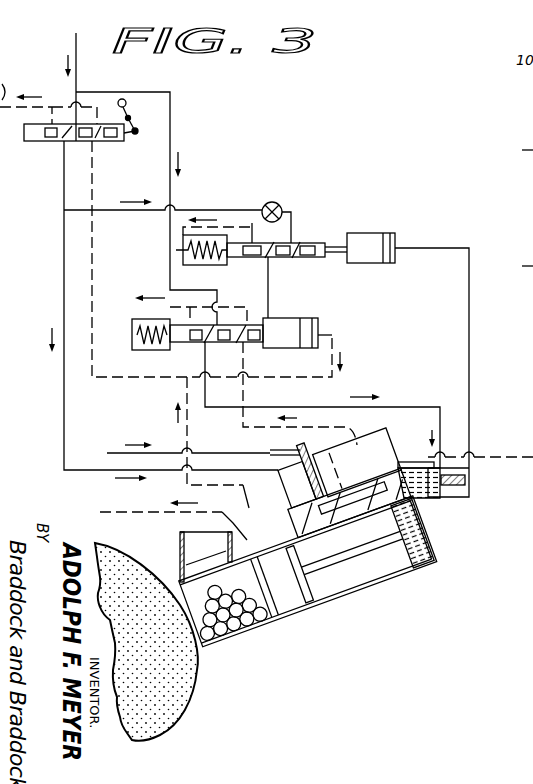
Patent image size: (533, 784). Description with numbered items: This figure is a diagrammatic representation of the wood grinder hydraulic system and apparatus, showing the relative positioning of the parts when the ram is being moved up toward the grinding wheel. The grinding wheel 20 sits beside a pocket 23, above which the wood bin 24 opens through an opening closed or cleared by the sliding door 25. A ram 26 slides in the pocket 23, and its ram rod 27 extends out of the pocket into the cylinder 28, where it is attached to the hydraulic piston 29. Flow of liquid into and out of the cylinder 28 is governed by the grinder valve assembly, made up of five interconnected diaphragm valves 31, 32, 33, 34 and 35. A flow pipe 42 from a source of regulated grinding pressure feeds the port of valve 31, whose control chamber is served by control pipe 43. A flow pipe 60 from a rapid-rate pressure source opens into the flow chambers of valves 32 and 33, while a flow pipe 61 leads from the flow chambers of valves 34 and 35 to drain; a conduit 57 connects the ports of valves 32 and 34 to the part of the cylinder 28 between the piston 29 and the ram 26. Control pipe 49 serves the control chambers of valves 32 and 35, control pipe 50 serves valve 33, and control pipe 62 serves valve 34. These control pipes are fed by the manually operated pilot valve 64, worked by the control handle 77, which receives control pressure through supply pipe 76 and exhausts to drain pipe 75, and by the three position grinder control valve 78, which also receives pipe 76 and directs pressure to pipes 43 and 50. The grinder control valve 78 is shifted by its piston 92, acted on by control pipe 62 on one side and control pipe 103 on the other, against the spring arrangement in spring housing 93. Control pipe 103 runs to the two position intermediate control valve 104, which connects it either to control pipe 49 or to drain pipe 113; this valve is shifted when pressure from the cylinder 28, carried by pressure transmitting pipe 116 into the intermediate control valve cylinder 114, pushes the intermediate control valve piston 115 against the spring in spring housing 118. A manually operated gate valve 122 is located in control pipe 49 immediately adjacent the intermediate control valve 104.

The grinding wheel 20 is at (198, 670).
The pocket 23 is at (270, 612).
The wood bin 24 is at (180, 540).
The sliding door 25 is at (190, 581).
The ram 26 is at (288, 559).
The ram rod 27 is at (322, 575).
The cylinder 28 is at (383, 570).
The hydraulic piston 29 is at (429, 562).
The valve 31 is at (450, 470).
The valve 32 is at (310, 496).
The valve 33 is at (374, 484).
The valve 34 is at (288, 513).
The valve 35 is at (406, 467).
The flow pipe 42 is at (466, 482).
The control pipe 43 is at (400, 407).
The control pipe 49 is at (64, 396).
The control pipe 50 is at (245, 428).
The conduit 57 is at (303, 533).
The flow pipe 60 is at (310, 448).
The flow pipe 61 is at (492, 457).
The control pipe 62 is at (333, 339).
The manually operated pilot valve 64 is at (38, 141).
The exhaust or drain pipe 75 is at (48, 97).
The control pressure supply pipe 76 is at (77, 84).
The control handle 77 is at (144, 110).
The three position grinder control valve 78 is at (318, 318).
The grinder control valve piston 92 is at (306, 318).
The spring housing 93 is at (132, 324).
The control pipe 103 is at (268, 299).
The two position intermediate control valve 104 is at (318, 243).
The drain or exhaust pipe 113 is at (252, 223).
The intermediate control valve cylinder 114 is at (372, 234).
The intermediate control valve piston 115 is at (389, 235).
The pressure transmitting pipe 116 is at (429, 248).
The spring housing 118 is at (183, 242).
The manually operated gate valve 122 is at (290, 194).